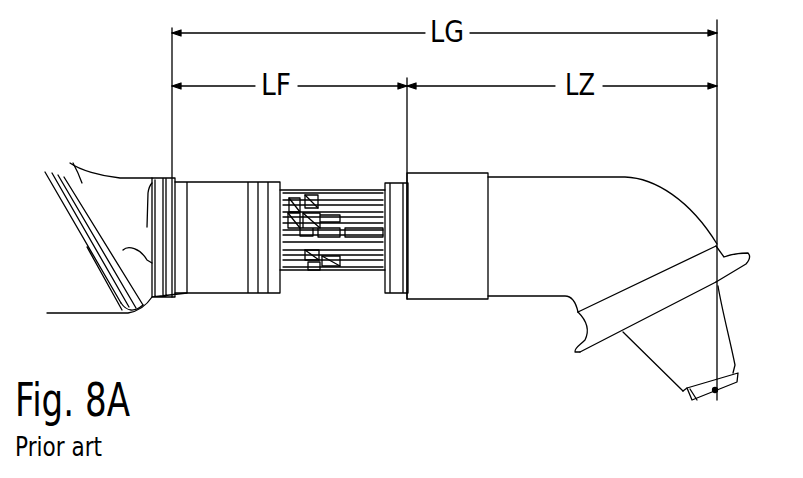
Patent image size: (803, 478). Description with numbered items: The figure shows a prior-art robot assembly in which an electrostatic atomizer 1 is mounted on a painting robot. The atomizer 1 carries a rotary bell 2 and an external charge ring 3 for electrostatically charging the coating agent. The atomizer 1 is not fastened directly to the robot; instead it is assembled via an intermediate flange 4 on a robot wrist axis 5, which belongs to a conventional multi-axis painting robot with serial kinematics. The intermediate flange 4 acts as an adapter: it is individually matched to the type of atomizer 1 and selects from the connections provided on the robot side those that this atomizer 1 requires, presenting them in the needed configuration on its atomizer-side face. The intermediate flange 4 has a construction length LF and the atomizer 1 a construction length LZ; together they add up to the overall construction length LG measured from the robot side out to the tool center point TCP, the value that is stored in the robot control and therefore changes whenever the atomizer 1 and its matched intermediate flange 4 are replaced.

The electrostatic atomizer 1 is at (603, 207).
The rotary bell 2 is at (700, 400).
The external charge ring 3 is at (578, 354).
The intermediate flange 4 is at (411, 311).
The robot wrist axis 5 is at (73, 165).
The tool center point TCP is at (716, 398).